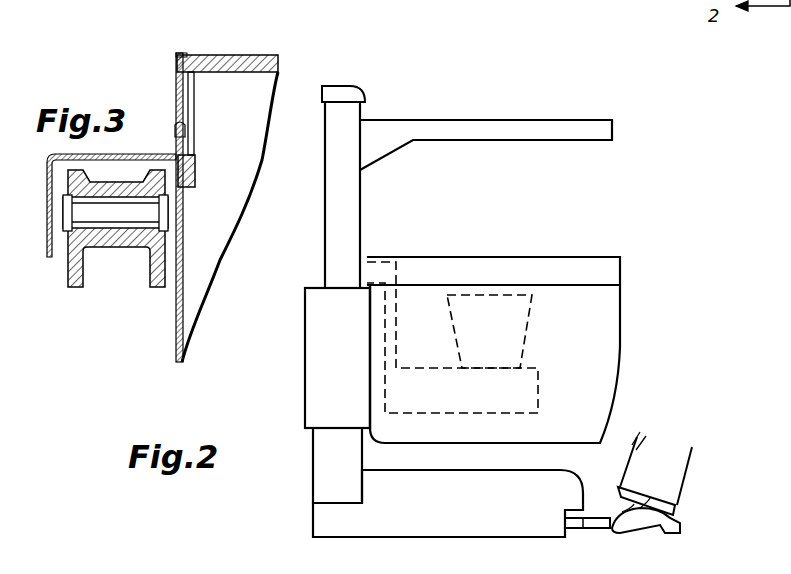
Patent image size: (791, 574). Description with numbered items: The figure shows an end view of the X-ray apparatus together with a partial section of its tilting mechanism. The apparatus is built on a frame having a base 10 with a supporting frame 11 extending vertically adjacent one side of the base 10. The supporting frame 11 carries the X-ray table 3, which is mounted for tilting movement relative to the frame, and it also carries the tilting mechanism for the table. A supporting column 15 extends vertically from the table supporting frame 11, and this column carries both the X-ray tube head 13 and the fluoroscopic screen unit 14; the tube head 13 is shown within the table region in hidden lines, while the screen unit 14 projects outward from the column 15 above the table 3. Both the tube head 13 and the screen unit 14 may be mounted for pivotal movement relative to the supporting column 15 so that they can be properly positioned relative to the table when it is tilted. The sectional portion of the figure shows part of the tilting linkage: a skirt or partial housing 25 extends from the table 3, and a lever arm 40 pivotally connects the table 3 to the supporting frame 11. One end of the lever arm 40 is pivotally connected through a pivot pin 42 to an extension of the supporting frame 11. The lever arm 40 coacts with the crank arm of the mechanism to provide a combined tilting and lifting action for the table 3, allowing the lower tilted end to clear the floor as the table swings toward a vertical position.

In FIG. 3, the X-ray table 3 is at (216, 58).
In FIG. 2, the X-ray table 3 is at (600, 256).
In FIG. 2, the base 10 is at (455, 537).
In FIG. 2, the supporting frame 11 is at (313, 482).
In FIG. 2, the X-ray tube head 13 is at (529, 328).
In FIG. 2, the fluoroscopic screen unit 14 is at (525, 113).
In FIG. 2, the supporting column 15 is at (362, 212).
In FIG. 3, the skirt or partial housing 25 is at (115, 158).
In FIG. 3, the lever arm 40 is at (158, 287).
In FIG. 3, the pivot pin 42 is at (138, 204).